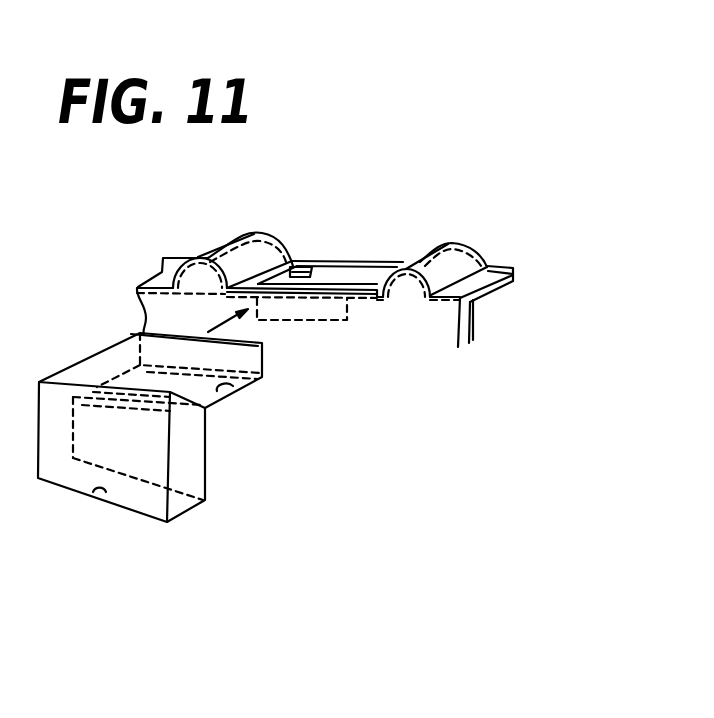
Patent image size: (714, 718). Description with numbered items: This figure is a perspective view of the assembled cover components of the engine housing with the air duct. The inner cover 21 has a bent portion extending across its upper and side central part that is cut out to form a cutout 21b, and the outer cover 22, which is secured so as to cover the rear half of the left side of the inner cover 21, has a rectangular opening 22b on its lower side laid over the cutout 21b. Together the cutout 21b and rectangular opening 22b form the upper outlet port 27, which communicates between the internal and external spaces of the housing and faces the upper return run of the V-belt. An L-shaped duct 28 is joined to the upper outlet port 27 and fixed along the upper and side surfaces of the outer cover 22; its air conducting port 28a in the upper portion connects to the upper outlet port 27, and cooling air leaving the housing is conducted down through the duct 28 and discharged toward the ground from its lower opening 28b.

The inner cover 21 is at (497, 293).
The cutout 21b is at (311, 273).
The outer cover 22 is at (487, 270).
The rectangular opening 22b is at (313, 280).
The upper outlet port 27 is at (337, 273).
The duct 28 is at (196, 462).
The air conducting port 28a is at (227, 387).
The lower opening 28b is at (103, 497).